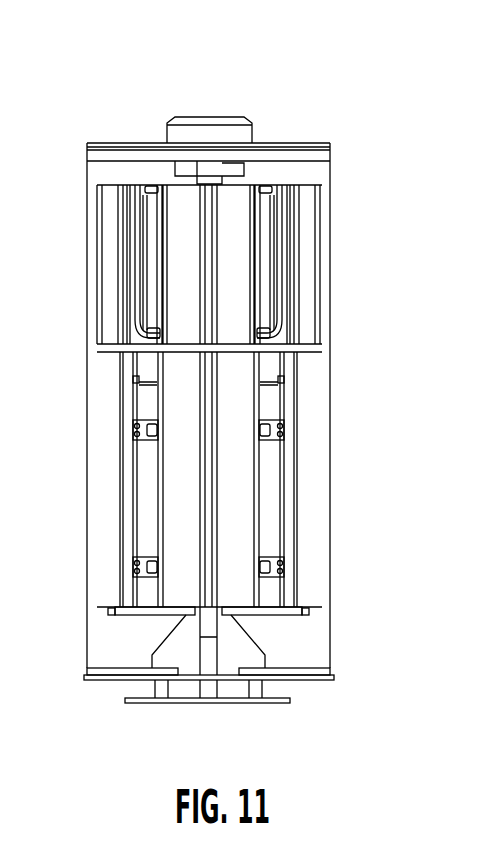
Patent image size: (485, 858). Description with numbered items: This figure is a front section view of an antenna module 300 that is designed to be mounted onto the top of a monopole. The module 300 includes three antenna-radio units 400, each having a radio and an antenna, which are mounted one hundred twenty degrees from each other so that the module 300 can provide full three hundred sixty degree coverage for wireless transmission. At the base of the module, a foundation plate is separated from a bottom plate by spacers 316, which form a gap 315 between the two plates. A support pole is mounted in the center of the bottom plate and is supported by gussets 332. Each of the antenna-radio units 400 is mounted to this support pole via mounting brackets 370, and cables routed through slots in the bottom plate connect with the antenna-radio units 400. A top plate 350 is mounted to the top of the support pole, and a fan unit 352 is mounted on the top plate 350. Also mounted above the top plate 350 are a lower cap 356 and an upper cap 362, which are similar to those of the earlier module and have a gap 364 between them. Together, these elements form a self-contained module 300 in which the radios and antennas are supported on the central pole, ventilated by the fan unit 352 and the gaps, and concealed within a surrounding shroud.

The module 300 is at (232, 377).
The gap 315 is at (252, 687).
The spacers 316 is at (160, 690).
The gussets 332 is at (245, 643).
The top plate 350 is at (205, 144).
The fan unit 352 is at (235, 172).
The lower cap 356 is at (113, 157).
The upper cap 362 is at (183, 117).
The gap 364 is at (165, 141).
The mounting brackets 370 is at (270, 572).
The antenna-radio units 400 is at (149, 629).